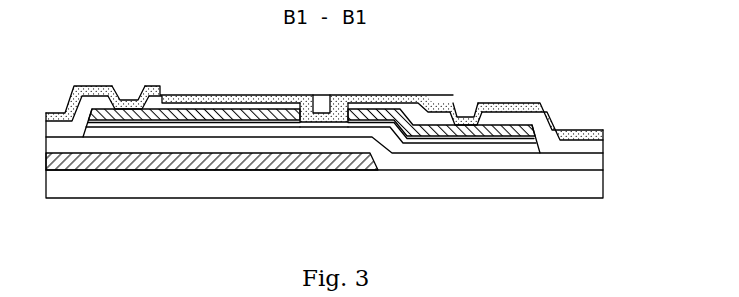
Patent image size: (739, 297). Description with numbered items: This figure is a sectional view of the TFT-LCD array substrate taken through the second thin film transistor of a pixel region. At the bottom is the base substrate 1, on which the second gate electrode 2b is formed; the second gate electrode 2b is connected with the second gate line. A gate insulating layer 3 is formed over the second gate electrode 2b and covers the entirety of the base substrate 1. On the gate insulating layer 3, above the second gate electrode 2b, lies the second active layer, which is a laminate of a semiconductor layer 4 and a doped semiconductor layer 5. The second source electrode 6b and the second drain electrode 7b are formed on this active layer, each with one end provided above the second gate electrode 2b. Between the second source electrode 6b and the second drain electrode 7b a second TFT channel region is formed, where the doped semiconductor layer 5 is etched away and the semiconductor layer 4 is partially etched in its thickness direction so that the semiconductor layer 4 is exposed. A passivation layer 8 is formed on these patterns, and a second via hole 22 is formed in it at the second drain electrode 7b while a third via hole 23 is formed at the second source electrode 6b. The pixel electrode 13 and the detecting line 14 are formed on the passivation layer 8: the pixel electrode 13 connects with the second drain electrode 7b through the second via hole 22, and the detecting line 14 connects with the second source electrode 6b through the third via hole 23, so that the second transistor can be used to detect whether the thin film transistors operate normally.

The base substrate 1 is at (517, 183).
The second gate electrode 2b is at (223, 160).
The gate insulating layer 3 is at (408, 162).
The semiconductor layer 4 is at (262, 132).
The doped semiconductor layer 5 is at (155, 121).
The second source electrode 6b is at (215, 113).
The second drain electrode 7b is at (375, 112).
The passivation layer 8 is at (289, 103).
The pixel electrode 13 is at (537, 107).
The detecting line 14 is at (147, 101).
The second via hole 22 is at (463, 111).
The third via hole 23 is at (126, 95).